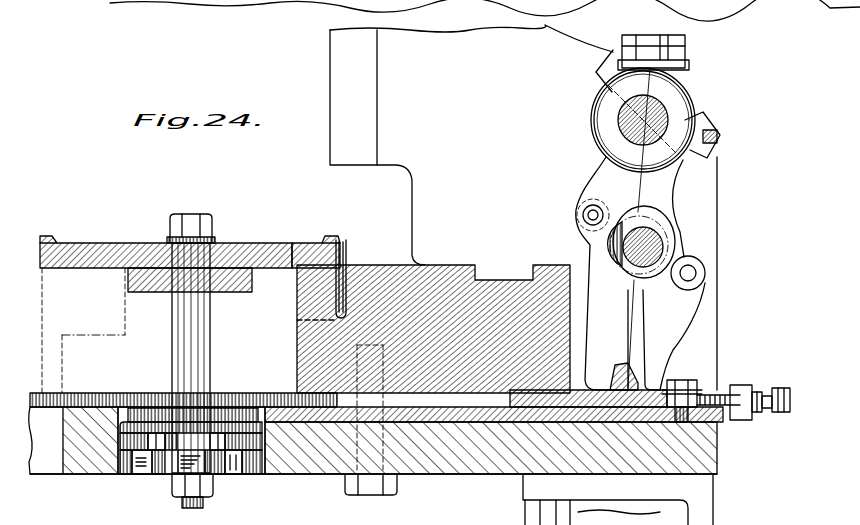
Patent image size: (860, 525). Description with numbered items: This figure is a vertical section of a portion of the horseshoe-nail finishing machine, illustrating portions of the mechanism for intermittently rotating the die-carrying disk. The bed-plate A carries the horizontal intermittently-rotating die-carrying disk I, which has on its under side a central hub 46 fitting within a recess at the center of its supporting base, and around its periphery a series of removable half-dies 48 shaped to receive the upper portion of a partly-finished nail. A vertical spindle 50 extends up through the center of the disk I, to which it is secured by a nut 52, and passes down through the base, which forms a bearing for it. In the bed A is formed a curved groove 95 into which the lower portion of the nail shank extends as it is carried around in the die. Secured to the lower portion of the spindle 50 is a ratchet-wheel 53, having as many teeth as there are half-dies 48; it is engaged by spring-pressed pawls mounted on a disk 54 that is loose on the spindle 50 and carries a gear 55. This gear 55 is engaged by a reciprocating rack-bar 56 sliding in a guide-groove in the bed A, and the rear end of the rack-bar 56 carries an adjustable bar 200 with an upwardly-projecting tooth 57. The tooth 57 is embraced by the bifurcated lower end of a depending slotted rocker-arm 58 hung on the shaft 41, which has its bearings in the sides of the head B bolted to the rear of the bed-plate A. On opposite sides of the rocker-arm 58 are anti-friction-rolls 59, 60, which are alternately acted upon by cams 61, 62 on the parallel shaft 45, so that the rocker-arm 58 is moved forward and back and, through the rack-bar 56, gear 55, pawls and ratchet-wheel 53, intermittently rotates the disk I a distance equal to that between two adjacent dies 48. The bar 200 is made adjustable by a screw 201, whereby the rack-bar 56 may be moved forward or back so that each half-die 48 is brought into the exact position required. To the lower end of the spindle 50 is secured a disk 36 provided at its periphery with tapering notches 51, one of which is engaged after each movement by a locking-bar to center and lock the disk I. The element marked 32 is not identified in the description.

The shaft 41 is at (657, 116).
The shaft 45 is at (663, 247).
The central hub 46 is at (246, 286).
The removable half-dies 48 is at (62, 245).
The vertical spindle 50 is at (211, 340).
The tapering notches 51 is at (193, 463).
The nut 52 is at (200, 226).
The ratchet-wheel 53 is at (178, 478).
The disk 54 is at (148, 428).
The gear 55 is at (162, 412).
The reciprocating rack-bar 56 is at (290, 392).
The upwardly-projecting tooth 57 is at (680, 353).
The depending slotted rocker-arm 58 is at (618, 273).
The anti-friction-roll 59 is at (705, 273).
The anti-friction-roll 60 is at (590, 205).
The cam 61 is at (666, 227).
The cam 62 is at (612, 243).
The curved groove 95 is at (340, 288).
The adjustable bar 200 is at (672, 380).
The screw 201 is at (781, 386).
The slide plate 32 is at (268, 466).
The disk 36 is at (155, 470).
The bed-plate A is at (474, 441).
The head or frame B is at (496, 268).
The die-carrying disk I is at (245, 250).